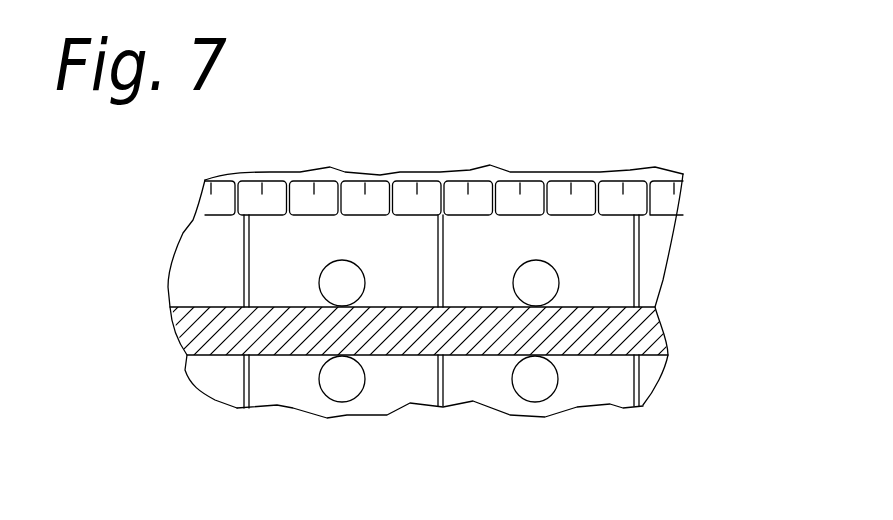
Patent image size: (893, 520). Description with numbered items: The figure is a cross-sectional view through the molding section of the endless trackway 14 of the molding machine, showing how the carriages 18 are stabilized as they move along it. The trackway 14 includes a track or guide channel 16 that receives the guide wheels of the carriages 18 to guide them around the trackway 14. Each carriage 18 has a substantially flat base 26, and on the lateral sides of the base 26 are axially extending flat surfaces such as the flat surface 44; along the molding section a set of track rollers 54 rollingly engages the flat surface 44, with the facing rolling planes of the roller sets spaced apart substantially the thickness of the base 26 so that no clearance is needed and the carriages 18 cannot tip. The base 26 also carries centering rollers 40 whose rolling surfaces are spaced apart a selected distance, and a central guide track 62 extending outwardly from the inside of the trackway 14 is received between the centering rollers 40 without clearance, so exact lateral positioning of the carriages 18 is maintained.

The endless trackway 14 is at (517, 163).
The track or guide channel 16 is at (427, 177).
The track rollers 54 is at (402, 187).
The flat surface 44 is at (341, 216).
The base 26 is at (200, 278).
The centering rollers 40 is at (332, 296).
The central guide track 62 is at (383, 345).
The carriages 18 is at (422, 398).